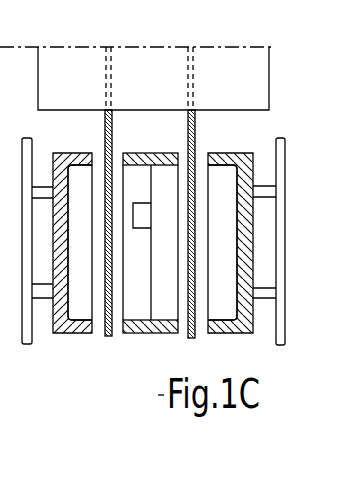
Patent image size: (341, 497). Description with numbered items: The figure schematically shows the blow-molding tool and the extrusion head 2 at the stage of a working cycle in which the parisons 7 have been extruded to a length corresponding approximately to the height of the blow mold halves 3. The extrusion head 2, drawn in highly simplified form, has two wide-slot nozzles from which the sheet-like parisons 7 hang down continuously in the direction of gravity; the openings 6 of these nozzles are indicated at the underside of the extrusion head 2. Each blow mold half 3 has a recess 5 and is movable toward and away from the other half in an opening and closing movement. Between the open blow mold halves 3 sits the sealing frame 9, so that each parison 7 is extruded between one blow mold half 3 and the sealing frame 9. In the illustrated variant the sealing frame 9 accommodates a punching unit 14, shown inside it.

The extrusion head 2 is at (228, 70).
The bore 6 is at (123, 118).
The parisons 7 is at (112, 336).
The blow mold halves 3 is at (72, 325).
The recess 5 is at (82, 307).
The sealing frame 9 is at (158, 333).
The punching unit 14 is at (139, 228).